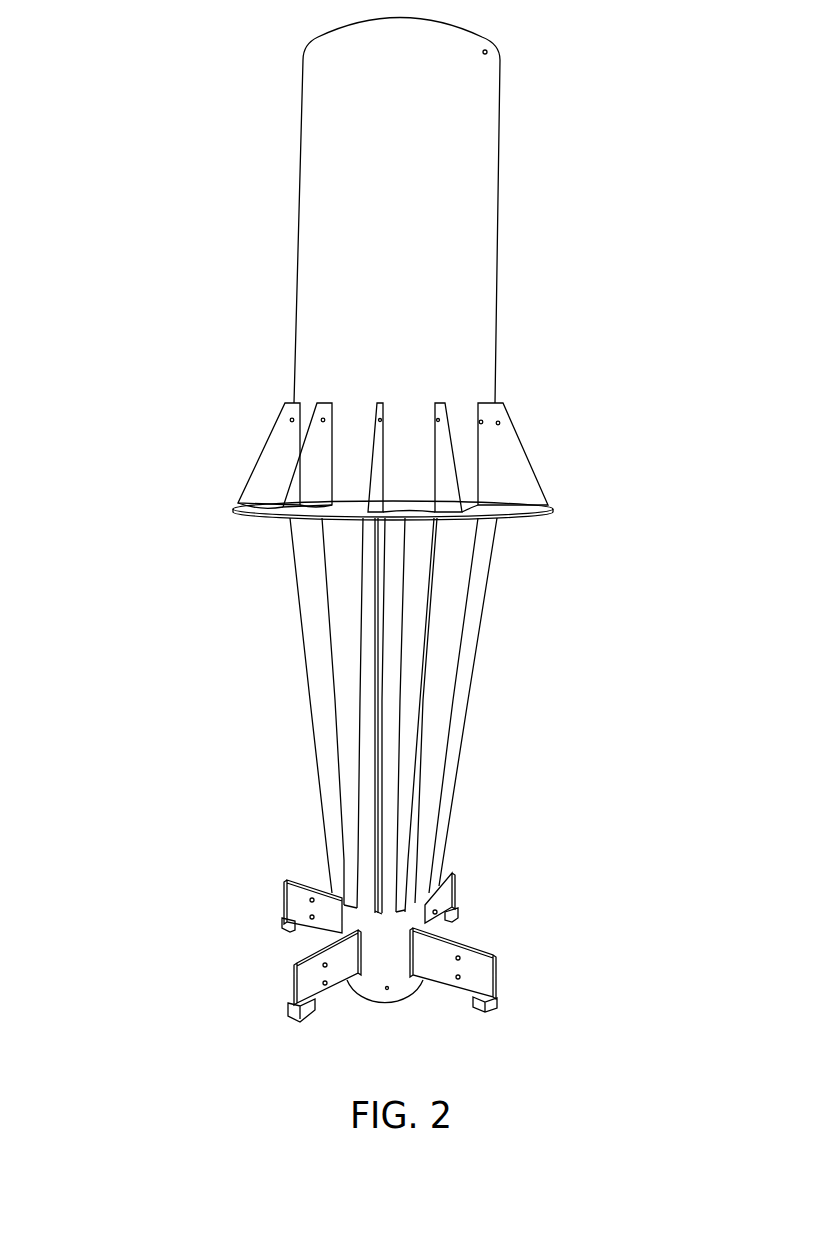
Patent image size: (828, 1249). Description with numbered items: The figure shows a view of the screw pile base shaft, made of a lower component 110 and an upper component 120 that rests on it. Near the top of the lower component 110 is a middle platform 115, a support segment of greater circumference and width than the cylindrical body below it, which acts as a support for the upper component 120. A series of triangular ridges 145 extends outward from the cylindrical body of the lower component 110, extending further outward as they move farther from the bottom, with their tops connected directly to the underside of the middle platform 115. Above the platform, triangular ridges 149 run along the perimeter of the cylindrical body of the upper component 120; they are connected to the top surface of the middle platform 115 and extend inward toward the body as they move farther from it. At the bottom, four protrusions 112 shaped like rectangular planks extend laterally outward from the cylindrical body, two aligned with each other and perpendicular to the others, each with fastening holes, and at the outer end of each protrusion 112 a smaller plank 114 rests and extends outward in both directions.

The lower component 110 is at (342, 657).
The protrusions 112 is at (502, 962).
The smaller plank 114 is at (512, 997).
The middle platform 115 is at (263, 503).
The upper component 120 is at (330, 332).
The triangular ridges 145 is at (485, 643).
The triangular ridges 149 is at (542, 435).